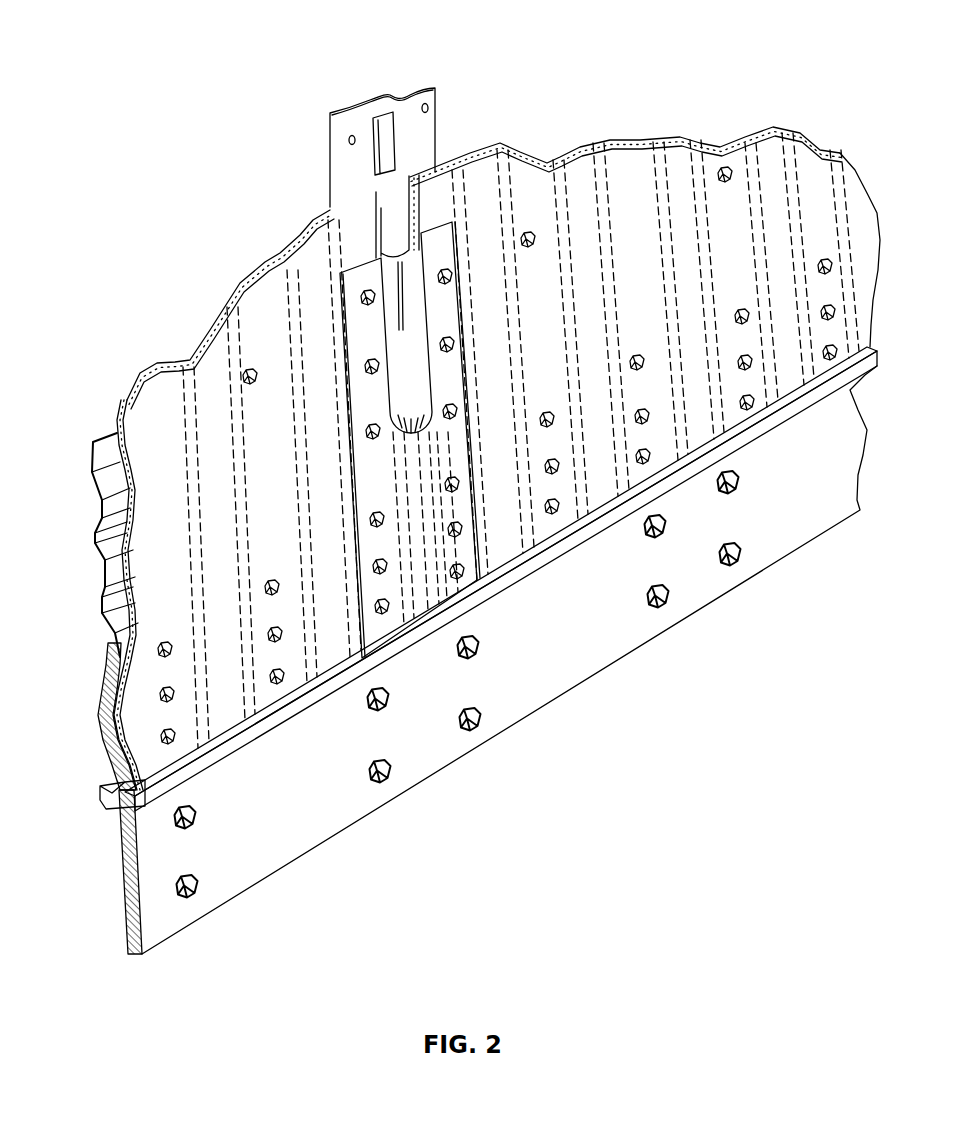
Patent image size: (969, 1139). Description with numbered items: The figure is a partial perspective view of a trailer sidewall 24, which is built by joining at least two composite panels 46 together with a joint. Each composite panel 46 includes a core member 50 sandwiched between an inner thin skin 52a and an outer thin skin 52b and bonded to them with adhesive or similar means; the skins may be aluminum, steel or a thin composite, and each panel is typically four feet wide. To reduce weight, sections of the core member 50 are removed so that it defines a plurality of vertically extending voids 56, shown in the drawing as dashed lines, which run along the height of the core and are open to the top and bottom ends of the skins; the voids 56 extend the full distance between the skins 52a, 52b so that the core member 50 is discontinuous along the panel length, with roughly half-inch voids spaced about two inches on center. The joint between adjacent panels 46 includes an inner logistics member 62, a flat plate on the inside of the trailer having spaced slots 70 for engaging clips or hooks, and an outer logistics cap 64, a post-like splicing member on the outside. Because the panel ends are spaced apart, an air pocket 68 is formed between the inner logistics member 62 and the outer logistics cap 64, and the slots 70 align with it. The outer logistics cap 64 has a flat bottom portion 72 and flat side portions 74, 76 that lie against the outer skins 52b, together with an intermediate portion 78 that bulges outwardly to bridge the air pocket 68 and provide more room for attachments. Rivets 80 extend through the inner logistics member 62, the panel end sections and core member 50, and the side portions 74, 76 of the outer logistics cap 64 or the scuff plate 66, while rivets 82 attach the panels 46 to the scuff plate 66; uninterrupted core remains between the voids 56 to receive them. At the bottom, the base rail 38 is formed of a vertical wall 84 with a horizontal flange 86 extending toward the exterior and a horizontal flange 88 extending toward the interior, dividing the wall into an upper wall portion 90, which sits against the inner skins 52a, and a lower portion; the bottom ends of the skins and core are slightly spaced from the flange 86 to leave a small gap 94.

The sidewall 24 is at (136, 38).
The base rail 38 is at (300, 853).
The composite panel 46 is at (166, 557).
The core member 50 is at (198, 330).
The inner thin skin 52a is at (248, 275).
The outer thin skin 52b is at (127, 400).
The vertically extending voids 56 is at (170, 357).
The inner logistics member 62 is at (403, 100).
The outer logistics cap 64 is at (455, 447).
The scuff plate 66 is at (100, 482).
The air pocket 68 is at (398, 188).
The slots 70 is at (373, 137).
The flat bottom portion 72 is at (417, 494).
The flat side portion 74 is at (380, 398).
The flat side portion 76 is at (450, 385).
The intermediate portion 78 is at (410, 303).
The rivets 80 is at (452, 348).
The rivets 82 is at (640, 366).
The vertical wall 84 is at (355, 802).
The horizontal flange 86 is at (340, 680).
The horizontal flange 88 is at (105, 788).
The upper wall portion 90 is at (108, 742).
The gap 94 is at (245, 730).